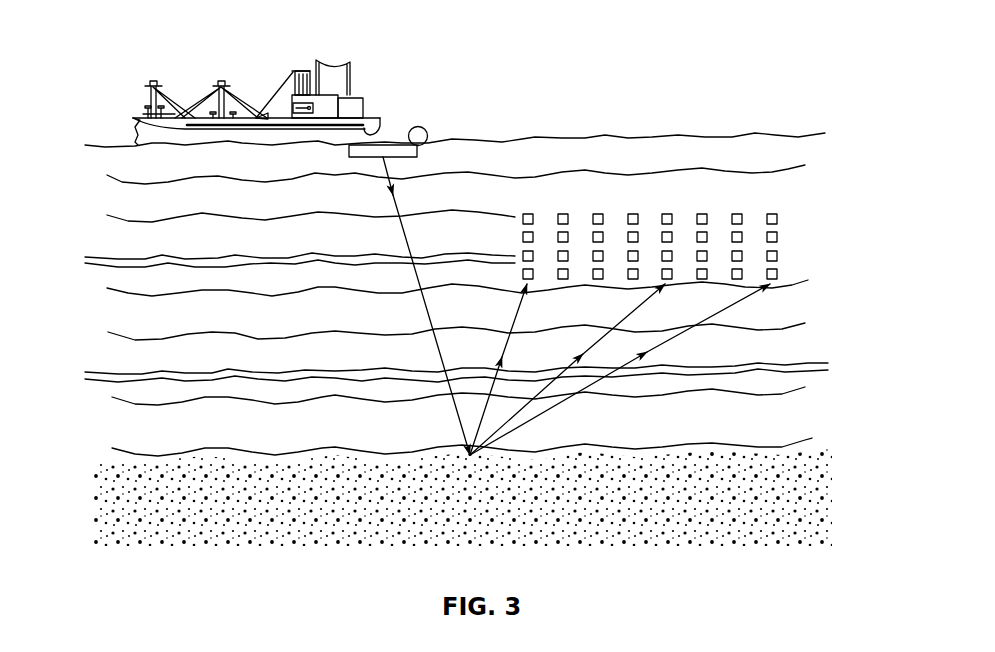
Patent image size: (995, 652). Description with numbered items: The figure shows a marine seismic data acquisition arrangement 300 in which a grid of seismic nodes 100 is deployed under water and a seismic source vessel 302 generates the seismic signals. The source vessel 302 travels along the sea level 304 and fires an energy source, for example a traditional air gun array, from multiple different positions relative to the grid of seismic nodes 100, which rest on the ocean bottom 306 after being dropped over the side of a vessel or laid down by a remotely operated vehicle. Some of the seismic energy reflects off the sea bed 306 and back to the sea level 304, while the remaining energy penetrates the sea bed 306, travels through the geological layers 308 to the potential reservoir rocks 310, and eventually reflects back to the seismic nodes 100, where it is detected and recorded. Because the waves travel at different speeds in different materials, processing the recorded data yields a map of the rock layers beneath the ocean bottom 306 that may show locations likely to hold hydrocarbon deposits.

The marine seismic survey system 300 is at (694, 32).
The seismic source vessel 302 is at (125, 58).
The sea level 304 is at (79, 145).
The ocean bottom 306 is at (79, 260).
The geological layers 308 is at (79, 375).
The potential reservoir rocks 310 is at (327, 503).
The seismic nodes 100 is at (633, 214).